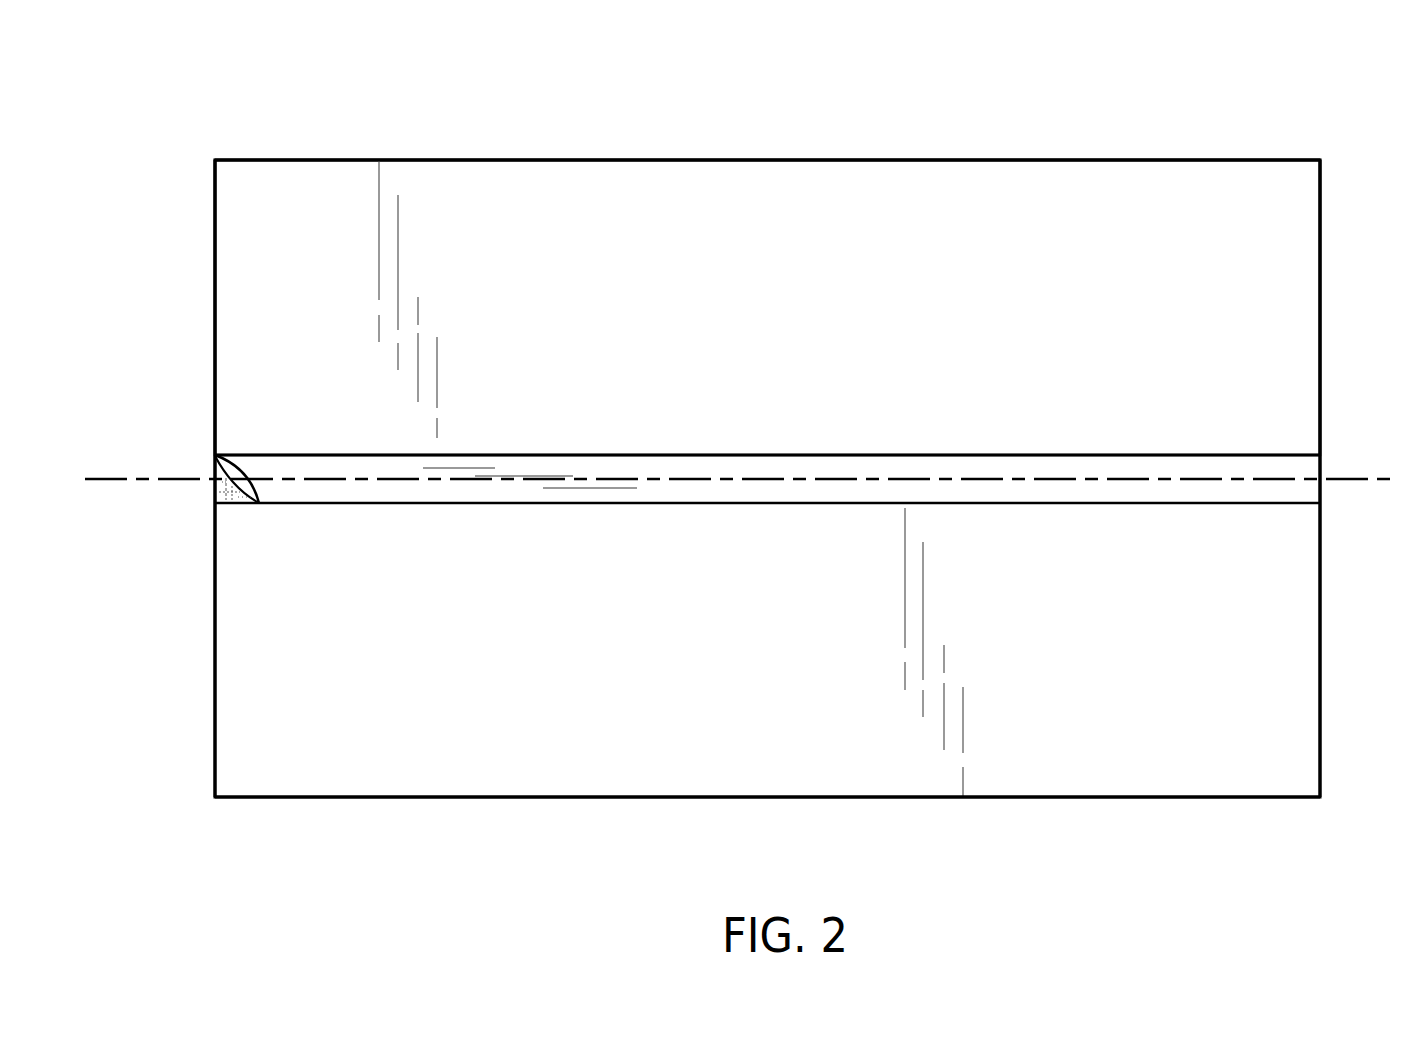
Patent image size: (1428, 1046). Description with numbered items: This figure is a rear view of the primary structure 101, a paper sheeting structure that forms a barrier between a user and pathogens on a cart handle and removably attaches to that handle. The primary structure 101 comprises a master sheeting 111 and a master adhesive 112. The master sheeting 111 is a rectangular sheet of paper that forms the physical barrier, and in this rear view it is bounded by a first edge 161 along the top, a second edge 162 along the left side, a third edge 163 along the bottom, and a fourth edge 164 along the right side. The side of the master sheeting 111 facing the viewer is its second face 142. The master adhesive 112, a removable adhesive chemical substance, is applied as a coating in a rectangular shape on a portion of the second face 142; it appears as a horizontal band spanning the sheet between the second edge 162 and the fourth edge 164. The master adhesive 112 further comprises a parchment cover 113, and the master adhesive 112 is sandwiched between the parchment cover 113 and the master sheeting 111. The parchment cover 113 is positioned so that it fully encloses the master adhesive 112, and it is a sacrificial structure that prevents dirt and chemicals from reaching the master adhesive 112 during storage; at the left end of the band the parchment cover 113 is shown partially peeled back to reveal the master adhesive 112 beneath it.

The primary structure 101 is at (218, 120).
The master sheeting 111 is at (215, 243).
The master adhesive 112 is at (227, 500).
The parchment cover 113 is at (248, 478).
The second face 142 is at (1267, 295).
The first edge 161 is at (576, 160).
The second edge 162 is at (215, 288).
The third edge 163 is at (548, 797).
The fourth edge 164 is at (1320, 600).